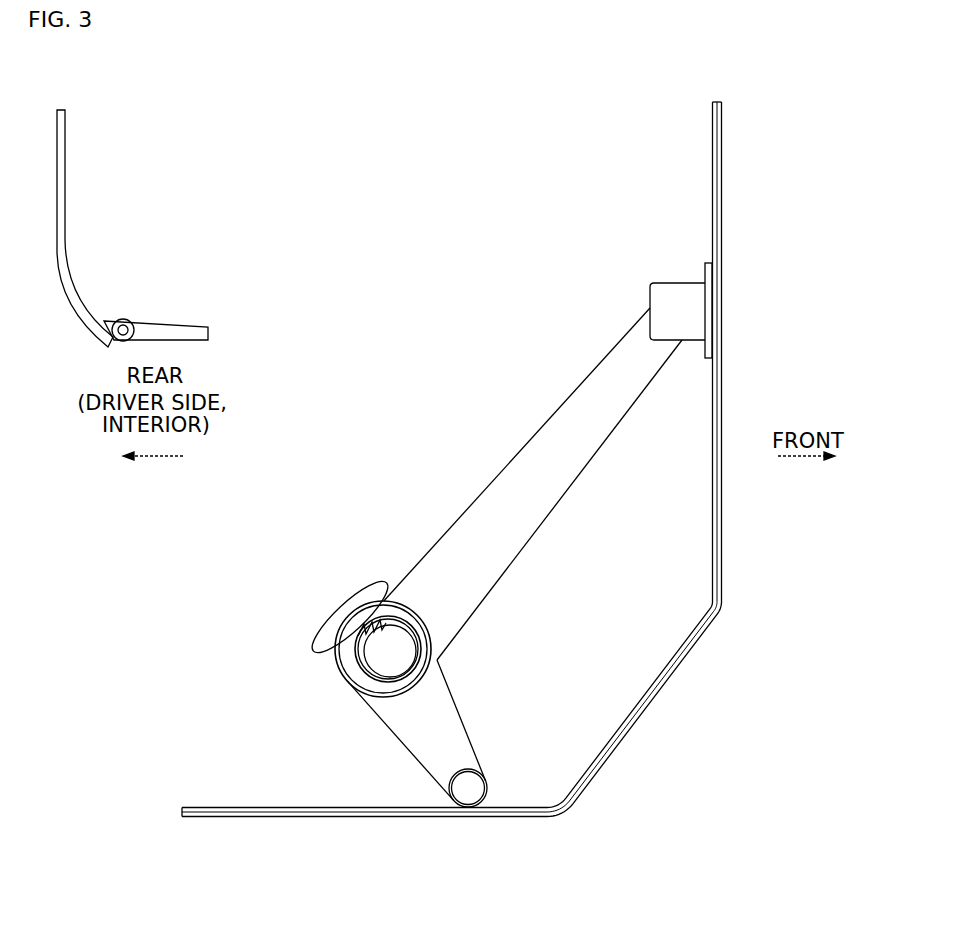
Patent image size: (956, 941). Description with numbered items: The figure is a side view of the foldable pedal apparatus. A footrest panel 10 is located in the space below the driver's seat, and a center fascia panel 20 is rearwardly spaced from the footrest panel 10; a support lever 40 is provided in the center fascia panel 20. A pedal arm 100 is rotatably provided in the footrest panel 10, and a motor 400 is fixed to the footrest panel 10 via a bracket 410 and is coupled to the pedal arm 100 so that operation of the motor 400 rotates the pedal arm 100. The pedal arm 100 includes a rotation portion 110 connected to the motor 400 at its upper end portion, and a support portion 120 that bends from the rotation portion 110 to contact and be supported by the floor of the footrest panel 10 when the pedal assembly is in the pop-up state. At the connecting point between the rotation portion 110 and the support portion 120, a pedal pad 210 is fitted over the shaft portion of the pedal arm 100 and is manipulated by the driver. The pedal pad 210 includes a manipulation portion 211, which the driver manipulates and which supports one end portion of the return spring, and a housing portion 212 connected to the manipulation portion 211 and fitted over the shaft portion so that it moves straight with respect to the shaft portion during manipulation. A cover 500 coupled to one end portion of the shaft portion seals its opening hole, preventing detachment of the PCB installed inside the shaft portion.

The footrest panel 10 is at (722, 523).
The center fascia panel 20 is at (67, 171).
The support lever 40 is at (173, 332).
The pedal arm 100 is at (514, 604).
The rotation portion 110 is at (547, 437).
The support portion 120 is at (428, 740).
The pedal pad 210 is at (318, 677).
The manipulation portion 211 is at (340, 597).
The housing portion 212 is at (415, 610).
The motor 400 is at (650, 300).
The bracket 410 is at (706, 268).
The cover 500 is at (375, 652).